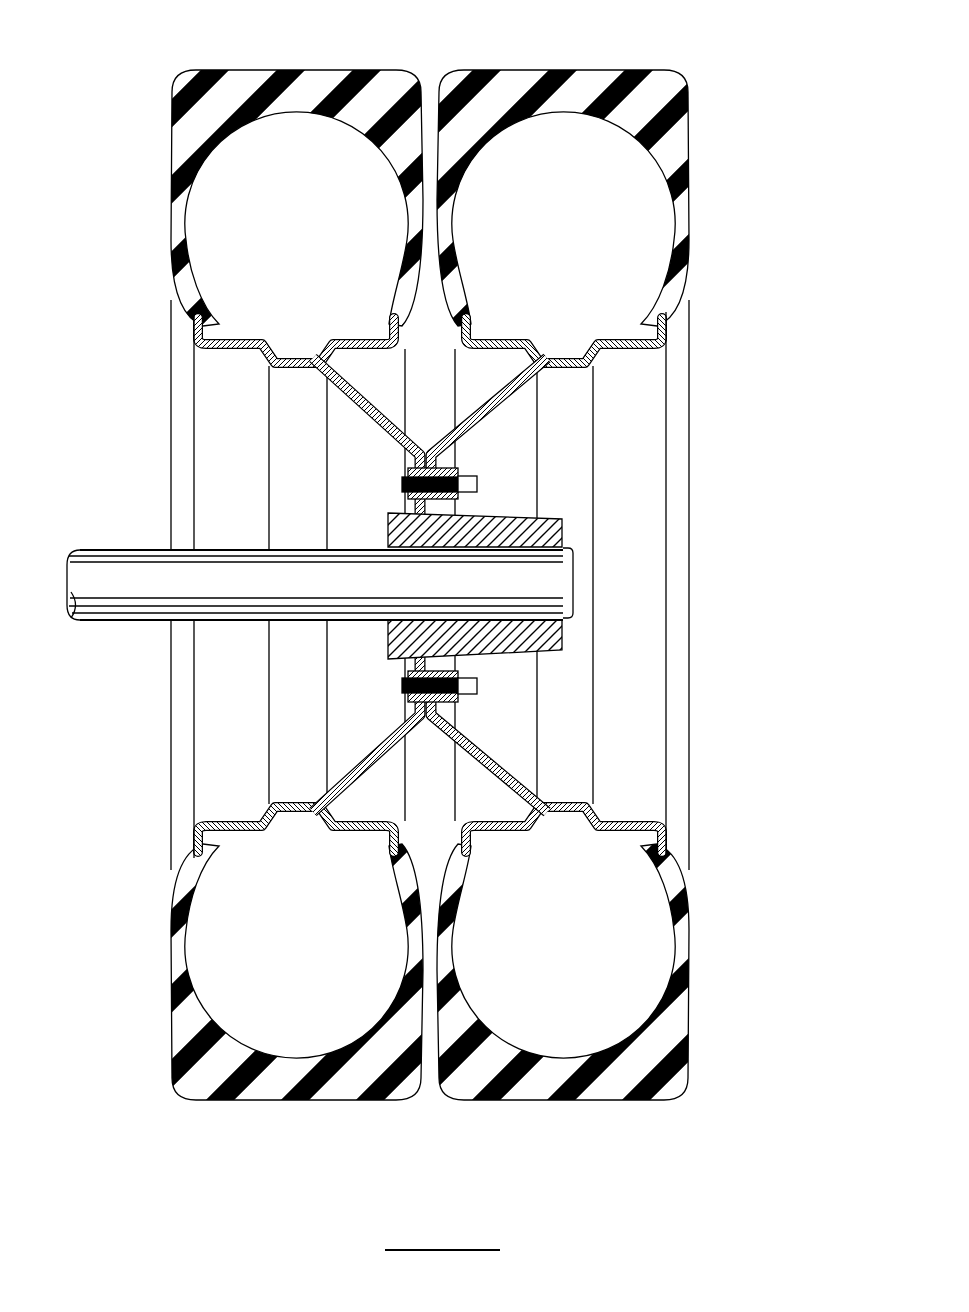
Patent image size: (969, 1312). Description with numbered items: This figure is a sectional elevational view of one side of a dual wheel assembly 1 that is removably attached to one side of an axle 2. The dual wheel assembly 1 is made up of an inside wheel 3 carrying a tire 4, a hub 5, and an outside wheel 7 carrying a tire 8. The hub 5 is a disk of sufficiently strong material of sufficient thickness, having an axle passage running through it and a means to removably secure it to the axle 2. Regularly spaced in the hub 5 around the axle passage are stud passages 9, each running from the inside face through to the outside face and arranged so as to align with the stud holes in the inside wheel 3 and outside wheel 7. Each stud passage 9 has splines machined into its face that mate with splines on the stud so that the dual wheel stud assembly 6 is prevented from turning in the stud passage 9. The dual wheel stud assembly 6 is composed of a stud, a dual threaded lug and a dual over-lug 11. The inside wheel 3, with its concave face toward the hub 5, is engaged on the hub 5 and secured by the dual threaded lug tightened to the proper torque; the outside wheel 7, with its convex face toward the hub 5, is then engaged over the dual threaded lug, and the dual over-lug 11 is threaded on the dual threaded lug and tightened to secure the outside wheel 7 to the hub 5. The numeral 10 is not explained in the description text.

The dual wheel assembly 1 is at (744, 446).
The axle 2 is at (110, 547).
The inside wheel 3 is at (188, 341).
The tire 4 is at (276, 64).
The hub 5 is at (388, 516).
The dual wheel stud assembly 6 is at (400, 481).
The outside wheel 7 is at (673, 330).
The tire 8 is at (540, 62).
The stud passage 9 is at (412, 464).
The lower rim webs 10 is at (372, 758).
The dual over-lug 11 is at (460, 465).